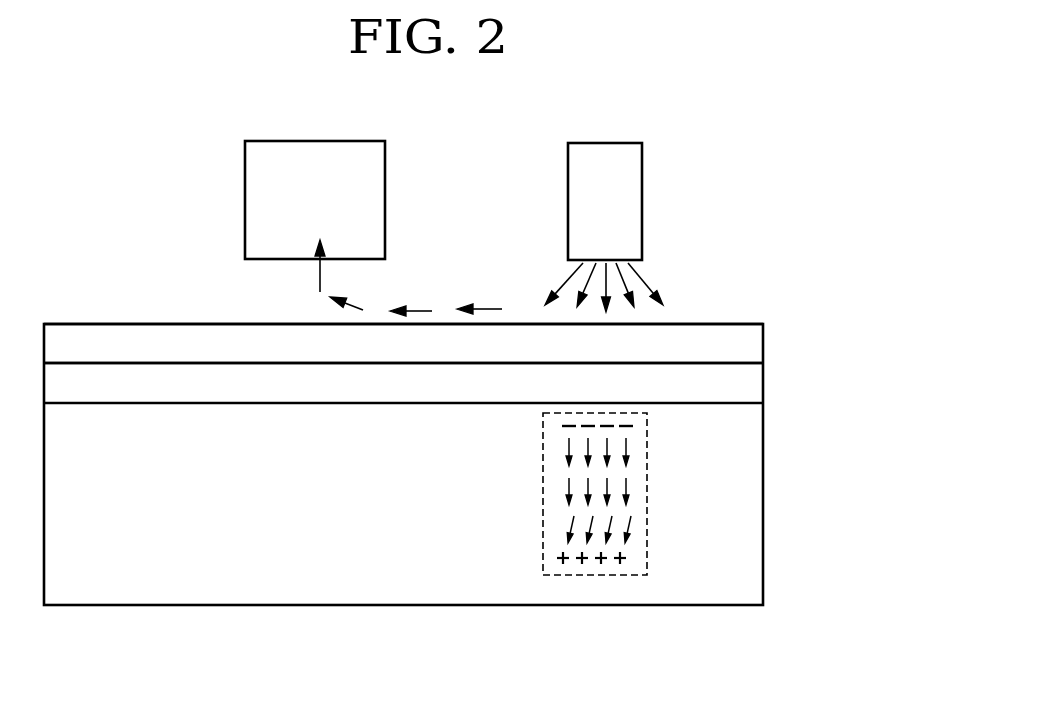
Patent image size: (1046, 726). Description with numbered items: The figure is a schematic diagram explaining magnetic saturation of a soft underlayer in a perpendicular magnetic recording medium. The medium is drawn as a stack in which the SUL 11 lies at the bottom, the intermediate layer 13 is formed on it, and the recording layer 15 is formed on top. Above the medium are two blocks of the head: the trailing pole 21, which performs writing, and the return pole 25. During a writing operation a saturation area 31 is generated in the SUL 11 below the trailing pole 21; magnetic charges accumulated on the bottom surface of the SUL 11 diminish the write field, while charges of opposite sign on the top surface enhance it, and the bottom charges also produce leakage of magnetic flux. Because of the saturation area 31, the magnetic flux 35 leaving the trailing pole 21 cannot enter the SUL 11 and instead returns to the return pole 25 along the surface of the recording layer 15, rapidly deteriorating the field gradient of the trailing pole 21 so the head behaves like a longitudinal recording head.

The SUL 11 is at (752, 545).
The intermediate layer 13 is at (758, 383).
The recording layer 15 is at (758, 343).
The trailing pole 21 is at (612, 142).
The return pole 25 is at (321, 140).
The saturation area 31 is at (596, 576).
The magnetic flux 35 is at (662, 264).